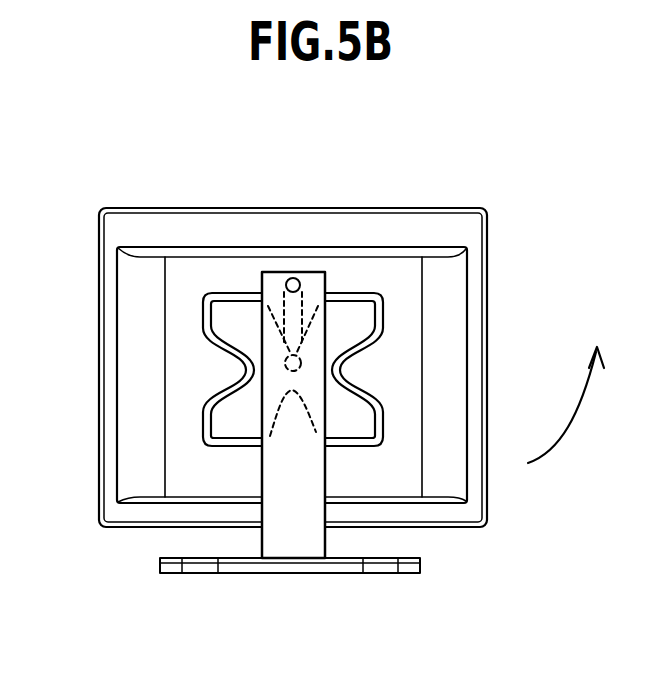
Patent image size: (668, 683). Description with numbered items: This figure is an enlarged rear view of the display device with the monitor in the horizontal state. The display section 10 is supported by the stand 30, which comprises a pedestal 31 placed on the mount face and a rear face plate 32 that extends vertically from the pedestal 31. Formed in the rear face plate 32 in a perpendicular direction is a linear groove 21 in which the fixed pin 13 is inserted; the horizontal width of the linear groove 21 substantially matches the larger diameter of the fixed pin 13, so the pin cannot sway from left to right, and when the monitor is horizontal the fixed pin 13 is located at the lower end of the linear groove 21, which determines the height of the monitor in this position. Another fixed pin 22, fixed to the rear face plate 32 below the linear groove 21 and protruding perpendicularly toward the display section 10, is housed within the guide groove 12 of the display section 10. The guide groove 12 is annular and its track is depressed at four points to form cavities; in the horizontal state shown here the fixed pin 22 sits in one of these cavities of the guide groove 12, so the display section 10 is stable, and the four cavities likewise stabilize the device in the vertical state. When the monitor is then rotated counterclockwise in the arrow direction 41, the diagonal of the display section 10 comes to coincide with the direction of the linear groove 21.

The display section 10 is at (290, 232).
The guide groove 12 is at (383, 300).
The fixed pin 13 is at (298, 360).
The linear groove 21 is at (288, 332).
The fixed pin 22 is at (292, 393).
The stand 30 is at (277, 574).
The pedestal 31 is at (352, 573).
The rear face plate 32 is at (282, 527).
The arrow direction 41 is at (583, 412).